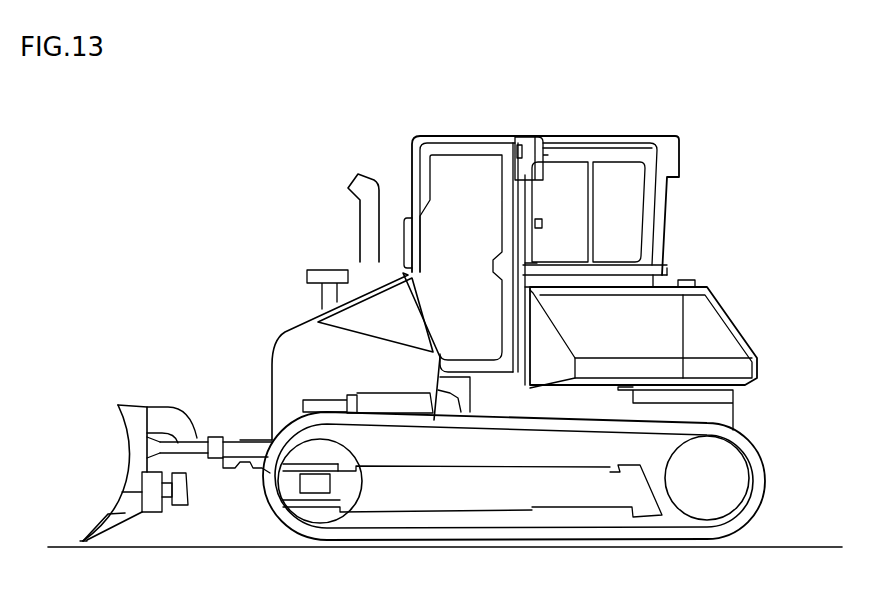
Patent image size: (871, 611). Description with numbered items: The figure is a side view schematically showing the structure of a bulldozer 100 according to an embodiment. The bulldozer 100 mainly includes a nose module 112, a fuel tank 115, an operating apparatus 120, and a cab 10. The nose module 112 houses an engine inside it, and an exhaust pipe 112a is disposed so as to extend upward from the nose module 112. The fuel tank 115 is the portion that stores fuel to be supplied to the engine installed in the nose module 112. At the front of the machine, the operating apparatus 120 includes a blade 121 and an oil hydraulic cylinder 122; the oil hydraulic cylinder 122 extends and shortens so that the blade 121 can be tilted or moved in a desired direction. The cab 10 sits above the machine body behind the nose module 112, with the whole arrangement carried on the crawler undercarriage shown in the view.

The bulldozer 100 is at (242, 143).
The cab 10 is at (498, 124).
The nose module 112 is at (292, 337).
The exhaust pipe 112a is at (368, 220).
The fuel tank 115 is at (728, 340).
The operating apparatus 120 is at (150, 380).
The blade 121 is at (120, 513).
The oil hydraulic cylinder 122 is at (237, 450).